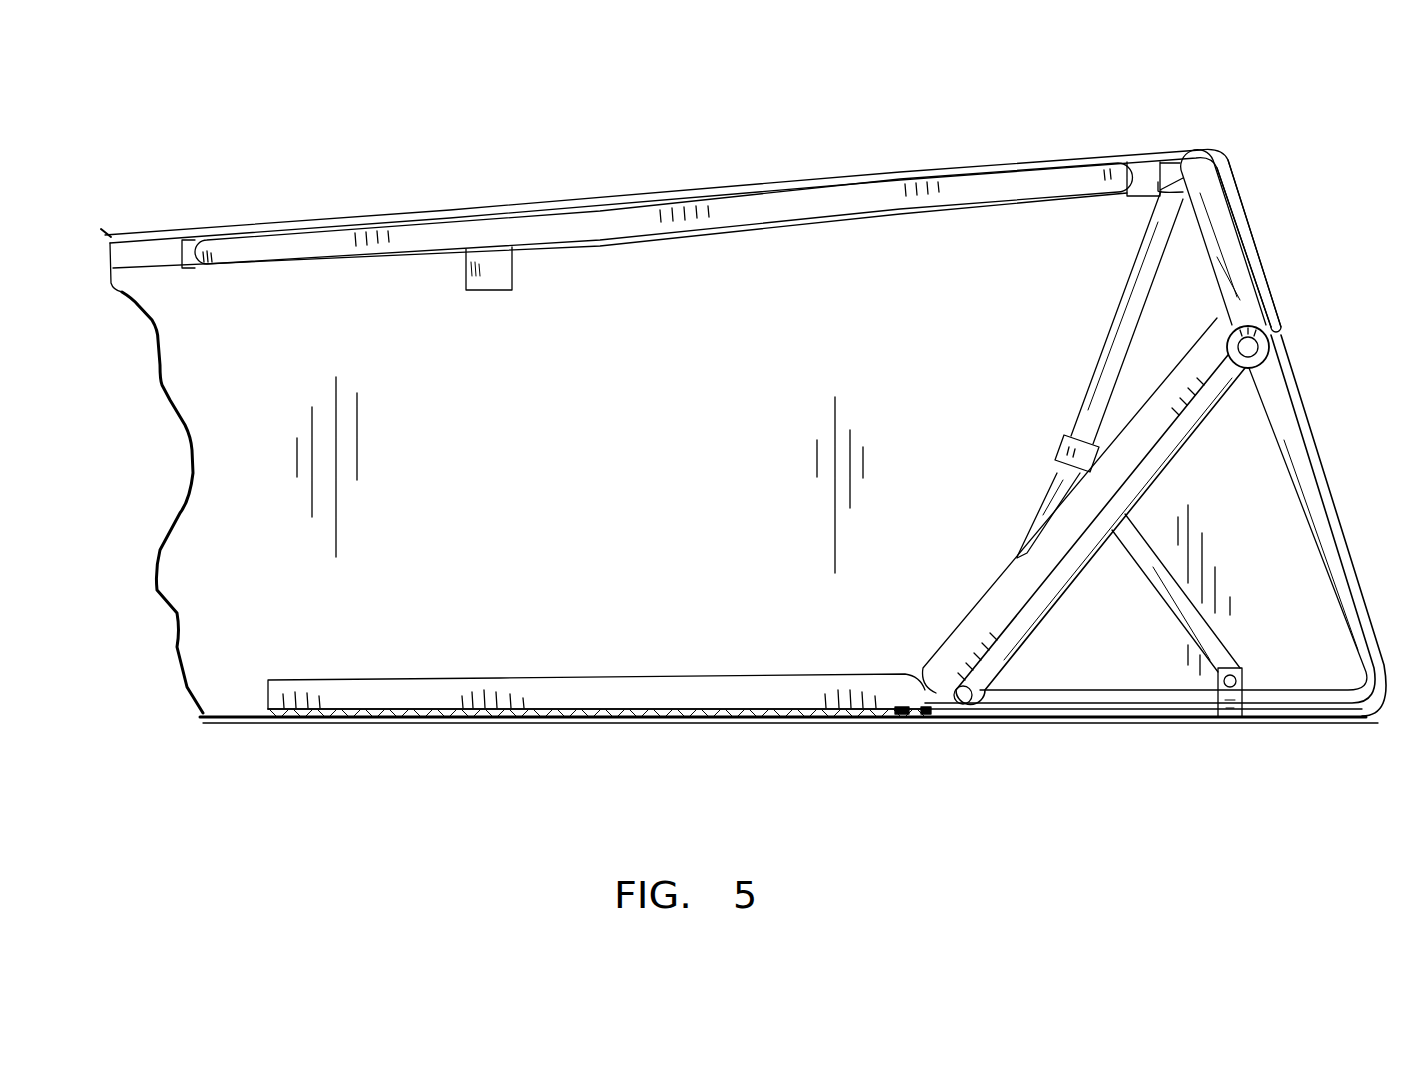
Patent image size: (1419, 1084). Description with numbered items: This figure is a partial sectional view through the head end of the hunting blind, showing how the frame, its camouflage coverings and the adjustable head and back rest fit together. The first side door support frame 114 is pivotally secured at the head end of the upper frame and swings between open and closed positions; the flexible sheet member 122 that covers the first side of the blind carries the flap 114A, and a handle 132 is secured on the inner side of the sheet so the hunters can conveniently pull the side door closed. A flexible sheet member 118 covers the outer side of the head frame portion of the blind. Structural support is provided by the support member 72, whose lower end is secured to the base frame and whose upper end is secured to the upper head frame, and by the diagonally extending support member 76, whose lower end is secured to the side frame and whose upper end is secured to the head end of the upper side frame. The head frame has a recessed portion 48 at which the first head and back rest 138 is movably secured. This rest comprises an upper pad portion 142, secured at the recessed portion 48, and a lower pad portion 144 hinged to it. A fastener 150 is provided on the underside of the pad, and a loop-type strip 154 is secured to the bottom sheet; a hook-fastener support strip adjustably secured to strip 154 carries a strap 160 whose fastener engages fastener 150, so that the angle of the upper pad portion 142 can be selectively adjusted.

The first side door support frame 114 is at (784, 173).
The flap 114A is at (1246, 226).
The flexible sheet member 118 is at (794, 436).
The support member 72 is at (1299, 512).
The recessed portion 48 is at (1272, 350).
The diagonally extending support member 76 is at (1100, 364).
The upper pad portion 142 is at (979, 600).
The first head and back rest 138 is at (1009, 566).
The fastener 150 is at (928, 718).
The lower pad portion 144 is at (528, 677).
The strip 154 is at (448, 722).
The strap 160 is at (838, 719).
The handle 132 is at (463, 290).
The flexible sheet member 122 is at (639, 463).